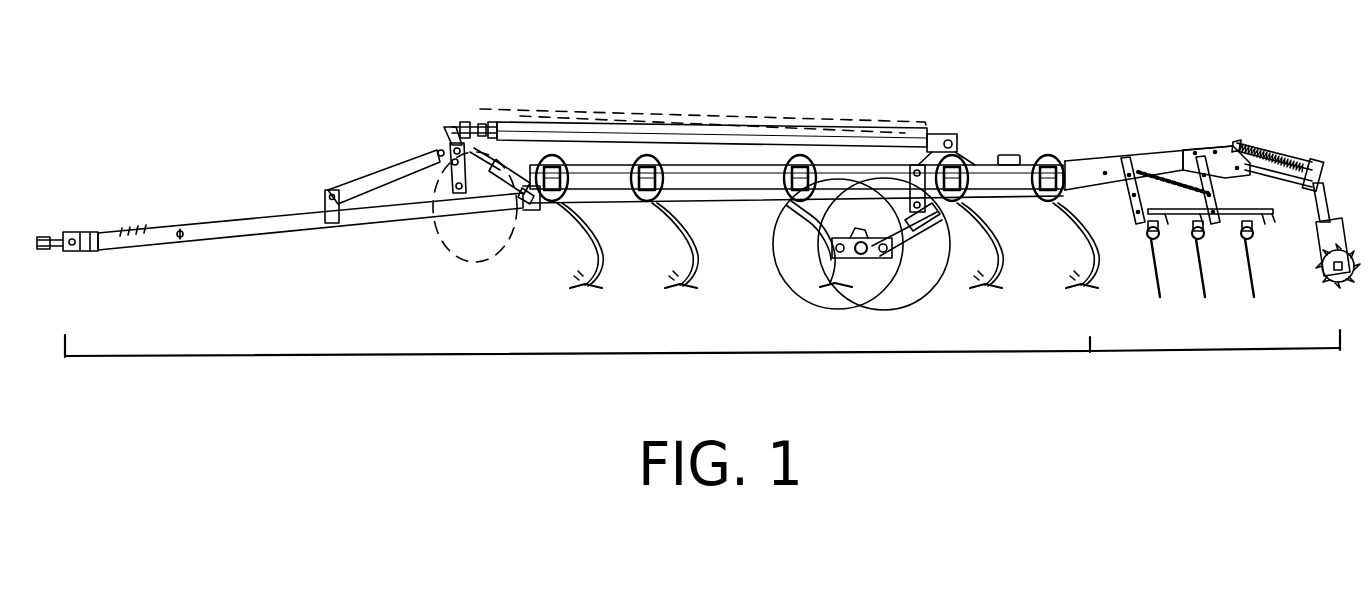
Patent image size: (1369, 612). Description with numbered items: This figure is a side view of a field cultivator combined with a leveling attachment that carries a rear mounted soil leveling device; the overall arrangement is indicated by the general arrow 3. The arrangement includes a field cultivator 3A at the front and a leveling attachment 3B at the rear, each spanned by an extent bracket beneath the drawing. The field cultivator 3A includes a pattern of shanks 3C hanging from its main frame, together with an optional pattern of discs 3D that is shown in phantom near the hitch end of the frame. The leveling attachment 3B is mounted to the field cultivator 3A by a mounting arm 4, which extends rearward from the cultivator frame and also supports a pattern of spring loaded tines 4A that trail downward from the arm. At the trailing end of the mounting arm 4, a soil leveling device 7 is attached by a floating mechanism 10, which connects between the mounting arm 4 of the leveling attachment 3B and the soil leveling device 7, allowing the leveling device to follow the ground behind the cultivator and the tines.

The tillage implement 3 is at (680, 68).
The field cultivator 3A is at (463, 358).
The leveling attachment 3B is at (1207, 352).
The shanks 3C is at (592, 251).
The discs 3D is at (432, 242).
The mounting arm 4 is at (1143, 147).
The spring loaded tines 4A is at (1153, 275).
The soil leveling device 7 is at (1318, 282).
The floating mechanism 10 is at (1267, 110).